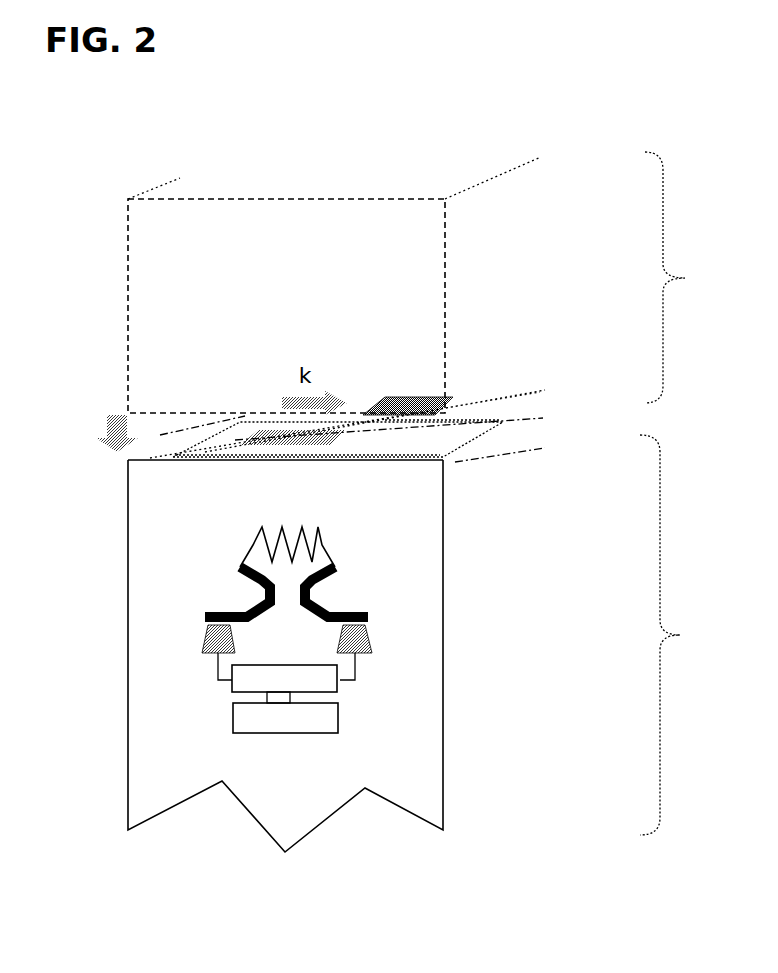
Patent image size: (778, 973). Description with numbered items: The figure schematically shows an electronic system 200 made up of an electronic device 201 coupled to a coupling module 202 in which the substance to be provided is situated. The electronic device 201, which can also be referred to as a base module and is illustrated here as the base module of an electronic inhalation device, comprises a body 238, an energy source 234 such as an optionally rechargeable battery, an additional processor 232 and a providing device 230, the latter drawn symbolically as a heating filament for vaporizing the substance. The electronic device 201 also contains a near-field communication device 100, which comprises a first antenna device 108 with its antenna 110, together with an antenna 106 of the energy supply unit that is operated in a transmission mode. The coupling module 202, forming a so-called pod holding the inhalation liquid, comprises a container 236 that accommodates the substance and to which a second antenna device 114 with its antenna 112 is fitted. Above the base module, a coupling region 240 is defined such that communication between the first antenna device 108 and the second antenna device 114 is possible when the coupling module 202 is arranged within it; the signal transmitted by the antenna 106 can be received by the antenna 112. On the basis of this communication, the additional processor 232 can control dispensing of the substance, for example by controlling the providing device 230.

The electronic system 200 is at (574, 122).
The coupling module 202 is at (694, 277).
The electronic device 201 is at (688, 635).
The container 236 is at (128, 313).
The coupling region 240 is at (157, 452).
The near-field communication device 100 is at (510, 424).
The antenna 112 is at (410, 395).
The second antenna device 114 is at (440, 397).
The first antenna device 108 is at (330, 438).
The antenna 110 is at (243, 437).
The antenna 106 is at (443, 460).
The body 238 is at (128, 630).
The providing device 230 is at (322, 543).
The additional processor 232 is at (337, 690).
The energy source 234 is at (338, 718).